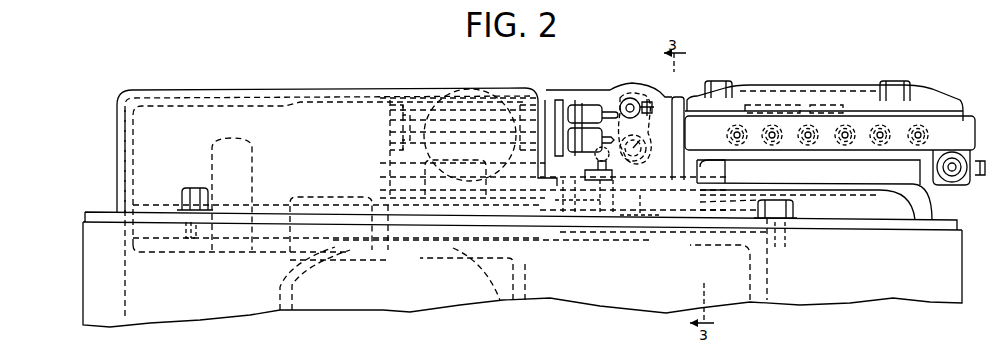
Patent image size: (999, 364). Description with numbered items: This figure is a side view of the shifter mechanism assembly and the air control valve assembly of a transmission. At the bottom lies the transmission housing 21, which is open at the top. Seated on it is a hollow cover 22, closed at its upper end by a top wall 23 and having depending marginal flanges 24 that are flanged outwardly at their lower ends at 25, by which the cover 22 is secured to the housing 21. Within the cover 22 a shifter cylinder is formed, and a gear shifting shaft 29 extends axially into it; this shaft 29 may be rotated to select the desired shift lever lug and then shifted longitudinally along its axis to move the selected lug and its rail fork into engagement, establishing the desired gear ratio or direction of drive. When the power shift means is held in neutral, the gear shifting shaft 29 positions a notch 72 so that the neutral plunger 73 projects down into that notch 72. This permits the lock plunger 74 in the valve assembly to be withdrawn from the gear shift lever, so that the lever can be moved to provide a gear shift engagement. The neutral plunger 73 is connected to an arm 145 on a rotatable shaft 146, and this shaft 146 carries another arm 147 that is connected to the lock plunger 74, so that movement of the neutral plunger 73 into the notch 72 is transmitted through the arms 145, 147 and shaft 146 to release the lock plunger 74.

The housing 21 is at (90, 255).
The hollow cover 22 is at (225, 88).
The top wall 23 is at (346, 87).
The depending marginal flanges 24 is at (117, 145).
The outwardly flanged lower ends 25 is at (92, 212).
The gear shifting shaft 29 is at (612, 195).
The notch 72 is at (585, 185).
The neutral plunger 73 is at (600, 192).
The lock plunger 74 is at (680, 100).
The arm 145 is at (594, 115).
The rotatable shaft 146 is at (644, 100).
The arm 147 is at (618, 105).